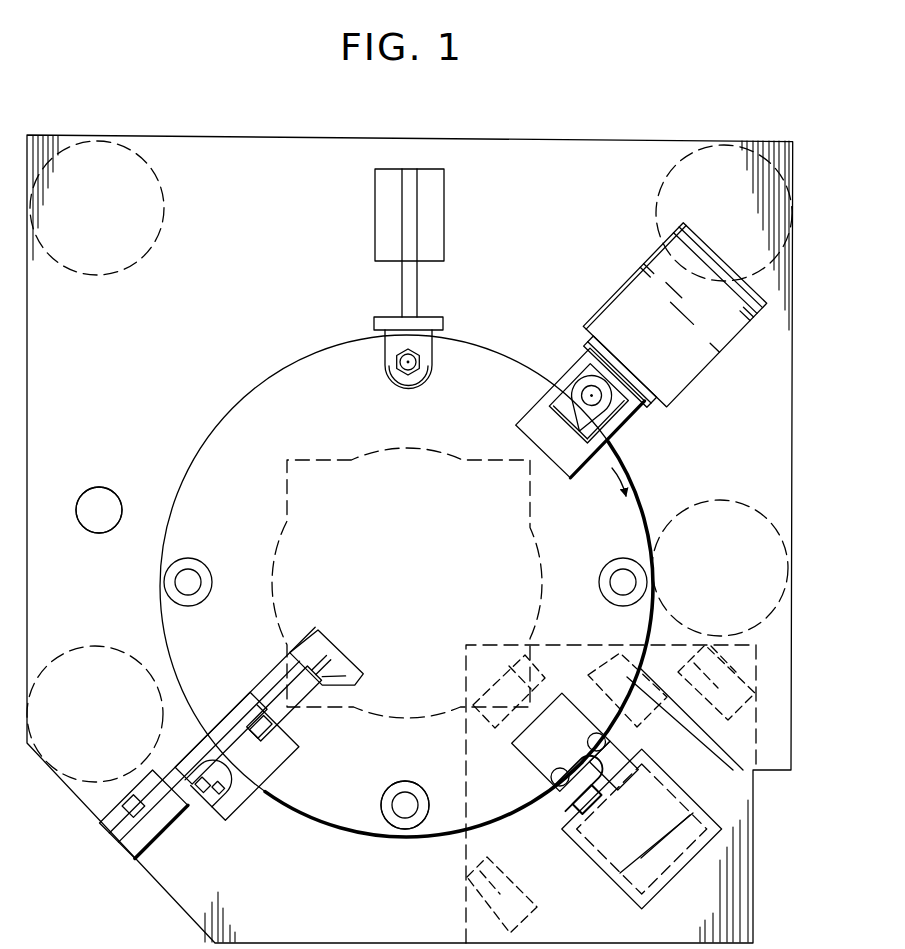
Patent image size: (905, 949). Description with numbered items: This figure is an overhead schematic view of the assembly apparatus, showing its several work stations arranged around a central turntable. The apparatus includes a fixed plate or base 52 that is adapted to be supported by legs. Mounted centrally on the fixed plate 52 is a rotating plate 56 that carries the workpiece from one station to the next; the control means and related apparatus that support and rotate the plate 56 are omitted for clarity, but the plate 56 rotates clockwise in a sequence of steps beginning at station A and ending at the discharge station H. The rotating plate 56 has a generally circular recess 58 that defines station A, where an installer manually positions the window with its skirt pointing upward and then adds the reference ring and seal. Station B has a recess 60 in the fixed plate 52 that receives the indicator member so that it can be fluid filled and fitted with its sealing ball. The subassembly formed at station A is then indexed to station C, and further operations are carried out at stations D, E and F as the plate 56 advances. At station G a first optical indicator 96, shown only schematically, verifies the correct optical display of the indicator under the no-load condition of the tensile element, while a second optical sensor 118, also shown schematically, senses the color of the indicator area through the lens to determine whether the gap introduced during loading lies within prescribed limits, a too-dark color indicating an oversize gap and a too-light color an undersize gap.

The fixed plate 52 is at (164, 337).
The rotating plate 56 is at (220, 418).
The circular recess 58 is at (393, 790).
The recess 60 is at (106, 488).
The first optical indicator 96 is at (604, 737).
The second optical sensor 118 is at (540, 828).
The station A is at (398, 836).
The station B is at (84, 532).
The station C is at (186, 557).
The station D is at (384, 378).
The station E is at (606, 597).
The station F is at (631, 427).
The station G is at (581, 740).
The discharge station H is at (242, 802).